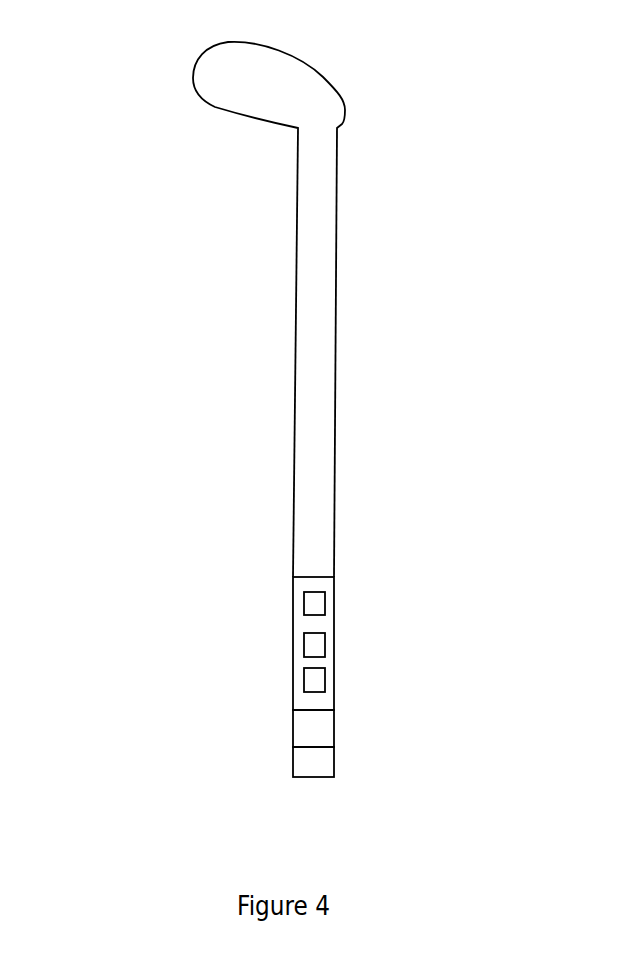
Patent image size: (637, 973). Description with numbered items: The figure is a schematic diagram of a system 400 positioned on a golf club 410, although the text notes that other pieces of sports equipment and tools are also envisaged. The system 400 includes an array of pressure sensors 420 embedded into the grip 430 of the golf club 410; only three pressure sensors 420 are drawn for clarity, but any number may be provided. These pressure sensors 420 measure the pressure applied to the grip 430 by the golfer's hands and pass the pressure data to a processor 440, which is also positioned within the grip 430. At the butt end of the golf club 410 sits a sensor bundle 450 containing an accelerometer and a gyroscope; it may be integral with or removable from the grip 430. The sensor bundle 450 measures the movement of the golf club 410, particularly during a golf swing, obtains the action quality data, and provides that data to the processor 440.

The system 400 is at (130, 72).
The golf club 410 is at (337, 116).
The pressure sensors 420 is at (310, 610).
The grip 430 is at (327, 625).
The processor 440 is at (310, 731).
The sensor bundle 450 is at (320, 759).